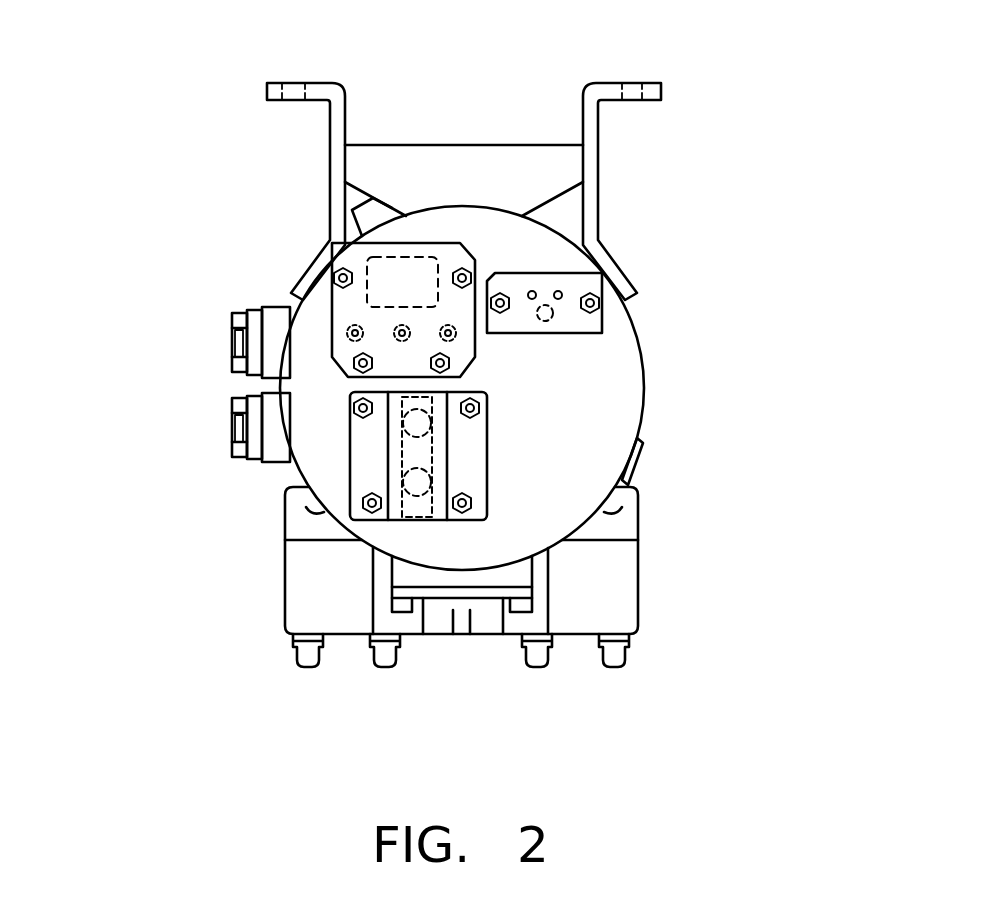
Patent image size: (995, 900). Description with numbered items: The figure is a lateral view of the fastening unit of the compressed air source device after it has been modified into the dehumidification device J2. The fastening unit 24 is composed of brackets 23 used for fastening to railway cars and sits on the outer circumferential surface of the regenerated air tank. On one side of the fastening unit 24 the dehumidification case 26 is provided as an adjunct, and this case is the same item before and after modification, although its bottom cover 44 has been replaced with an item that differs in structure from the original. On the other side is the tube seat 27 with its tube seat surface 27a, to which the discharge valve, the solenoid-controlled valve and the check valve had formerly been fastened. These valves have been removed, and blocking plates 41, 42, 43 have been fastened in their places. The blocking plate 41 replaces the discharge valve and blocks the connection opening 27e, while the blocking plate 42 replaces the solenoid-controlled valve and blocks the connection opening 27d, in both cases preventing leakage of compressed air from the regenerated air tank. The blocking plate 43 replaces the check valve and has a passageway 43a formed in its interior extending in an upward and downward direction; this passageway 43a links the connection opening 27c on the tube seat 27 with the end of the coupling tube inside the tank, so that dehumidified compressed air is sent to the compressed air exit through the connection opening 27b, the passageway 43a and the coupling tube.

The dehumidification device J2 is at (213, 108).
The brackets 23 is at (337, 127).
The fastening unit 24 is at (610, 200).
The dehumidification case 26 is at (302, 524).
The tube seat 27 is at (644, 390).
The tube seat surface 27a is at (618, 440).
The connection opening 27b is at (430, 520).
The connection opening 27c is at (430, 443).
The connection opening 27d is at (367, 262).
The connection opening 27e is at (545, 322).
The blocking plate 41 is at (585, 283).
The blocking plate 42 is at (347, 318).
The blocking plate 43 is at (365, 467).
The passageway 43a is at (393, 437).
The bottom cover 44 is at (603, 613).